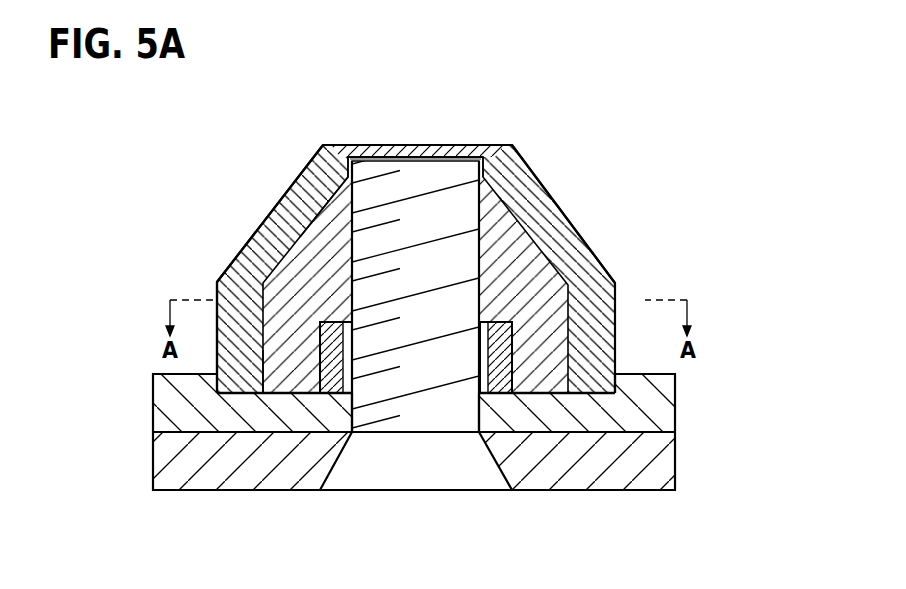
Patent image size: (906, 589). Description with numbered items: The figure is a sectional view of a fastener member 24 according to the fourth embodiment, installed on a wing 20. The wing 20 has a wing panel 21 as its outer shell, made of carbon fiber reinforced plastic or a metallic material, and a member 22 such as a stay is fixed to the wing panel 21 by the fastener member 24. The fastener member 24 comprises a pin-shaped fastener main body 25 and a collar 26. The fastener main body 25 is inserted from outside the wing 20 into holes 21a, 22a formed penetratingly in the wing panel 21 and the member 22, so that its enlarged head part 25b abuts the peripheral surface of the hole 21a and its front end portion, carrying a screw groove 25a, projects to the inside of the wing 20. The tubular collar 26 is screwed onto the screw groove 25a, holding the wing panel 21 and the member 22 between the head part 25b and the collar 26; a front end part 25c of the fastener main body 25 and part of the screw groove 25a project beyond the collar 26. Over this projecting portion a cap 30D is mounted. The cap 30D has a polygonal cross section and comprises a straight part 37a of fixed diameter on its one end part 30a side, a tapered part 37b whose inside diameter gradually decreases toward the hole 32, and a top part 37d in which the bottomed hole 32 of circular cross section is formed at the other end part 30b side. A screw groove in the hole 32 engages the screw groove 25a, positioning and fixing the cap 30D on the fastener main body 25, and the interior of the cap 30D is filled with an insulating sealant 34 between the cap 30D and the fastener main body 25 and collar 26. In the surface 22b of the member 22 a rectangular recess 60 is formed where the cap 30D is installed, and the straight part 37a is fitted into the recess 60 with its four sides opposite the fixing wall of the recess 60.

The wing 20 is at (441, 443).
The wing panel 21 is at (675, 460).
The hole 21a is at (503, 487).
The member 22 is at (675, 410).
The hole 22a is at (478, 432).
The surface 22b is at (162, 373).
The fastener member 24 is at (388, 292).
The fastener main body 25 is at (332, 205).
The screw groove 25a is at (340, 180).
The head part 25b is at (315, 480).
The front end part 25c is at (441, 158).
The collar 26 is at (338, 323).
The one end part 30a is at (214, 380).
The other end part 30b is at (481, 145).
The cap 30D is at (587, 247).
The bottomed hole 32 is at (395, 123).
The sealant 34 is at (313, 245).
The straight part 37a is at (214, 293).
The tapered part 37b is at (243, 250).
The top part 37d is at (506, 146).
The recess 60 is at (618, 372).